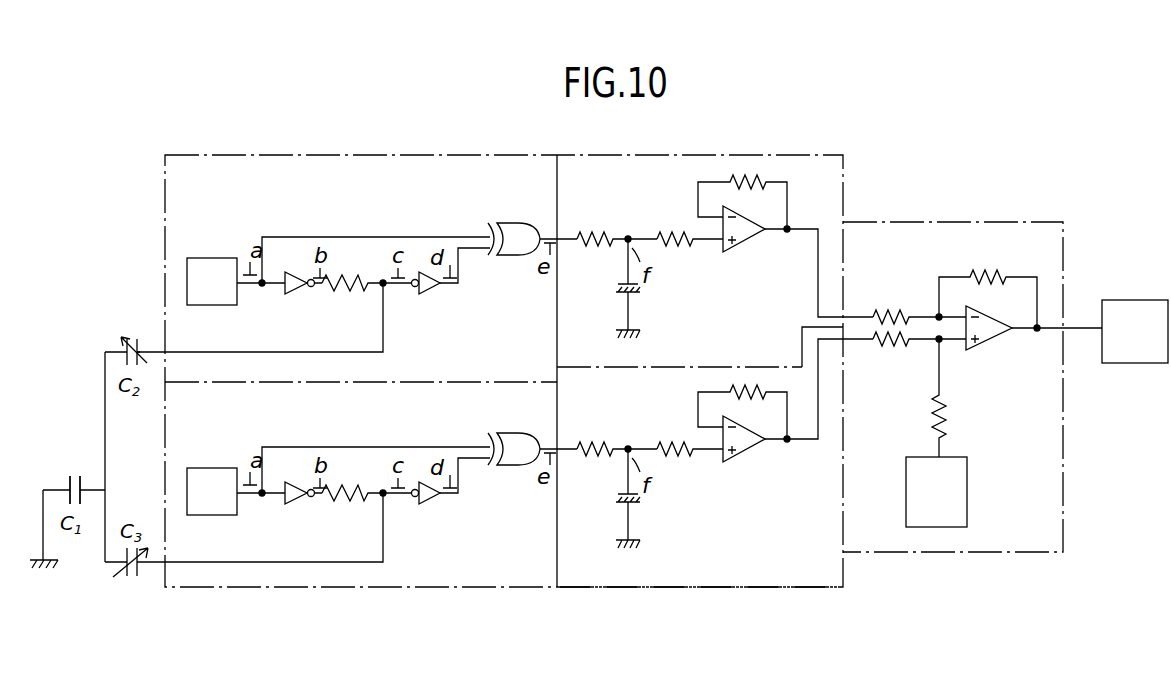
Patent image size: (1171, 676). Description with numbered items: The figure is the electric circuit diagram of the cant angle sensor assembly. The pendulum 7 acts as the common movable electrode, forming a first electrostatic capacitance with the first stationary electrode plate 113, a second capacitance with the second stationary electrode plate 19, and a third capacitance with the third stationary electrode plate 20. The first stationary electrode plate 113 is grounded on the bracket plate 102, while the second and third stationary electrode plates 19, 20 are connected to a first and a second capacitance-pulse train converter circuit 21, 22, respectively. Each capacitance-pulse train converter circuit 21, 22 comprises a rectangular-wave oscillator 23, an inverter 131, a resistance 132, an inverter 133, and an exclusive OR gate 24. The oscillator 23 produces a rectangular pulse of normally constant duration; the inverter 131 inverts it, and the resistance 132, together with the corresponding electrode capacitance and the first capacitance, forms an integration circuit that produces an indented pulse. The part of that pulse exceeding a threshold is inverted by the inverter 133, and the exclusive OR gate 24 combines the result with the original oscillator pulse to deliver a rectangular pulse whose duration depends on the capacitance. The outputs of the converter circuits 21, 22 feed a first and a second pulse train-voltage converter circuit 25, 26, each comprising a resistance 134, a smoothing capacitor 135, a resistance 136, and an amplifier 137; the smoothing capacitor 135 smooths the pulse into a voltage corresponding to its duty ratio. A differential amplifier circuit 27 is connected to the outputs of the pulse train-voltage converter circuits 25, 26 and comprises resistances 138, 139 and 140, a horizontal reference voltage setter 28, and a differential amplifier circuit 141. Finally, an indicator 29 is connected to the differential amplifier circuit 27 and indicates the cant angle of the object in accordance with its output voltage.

The pendulum 7 is at (126, 346).
The second stationary electrode plate 19 is at (140, 346).
The third stationary electrode plate 20 is at (141, 578).
The first capacitance-pulse train converter circuit 21 is at (437, 153).
The second capacitance-pulse train converter circuit 22 is at (360, 589).
The rectangular-wave oscillator 23 is at (199, 297).
The exclusive OR gate 24 is at (518, 255).
The first pulse train-voltage converter circuit 25 is at (711, 153).
The second pulse train-voltage converter circuit 26 is at (698, 589).
The differential amplifier circuit 27 is at (982, 222).
The horizontal reference voltage setter 28 is at (923, 511).
The indicator 29 is at (1122, 347).
The bracket plate 102 is at (40, 578).
The first stationary electrode plate 113 is at (70, 484).
The inverter 131 is at (296, 295).
The resistance 132 is at (351, 292).
The inverter 133 is at (432, 294).
The resistance 134 is at (584, 236).
The smoothing capacitor 135 is at (653, 292).
The resistance 136 is at (666, 236).
The amplifier 137 is at (747, 247).
The resistance 138 is at (888, 310).
The resistance 139 is at (890, 346).
The resistance 140 is at (947, 424).
The differential amplifier circuit 141 is at (997, 345).